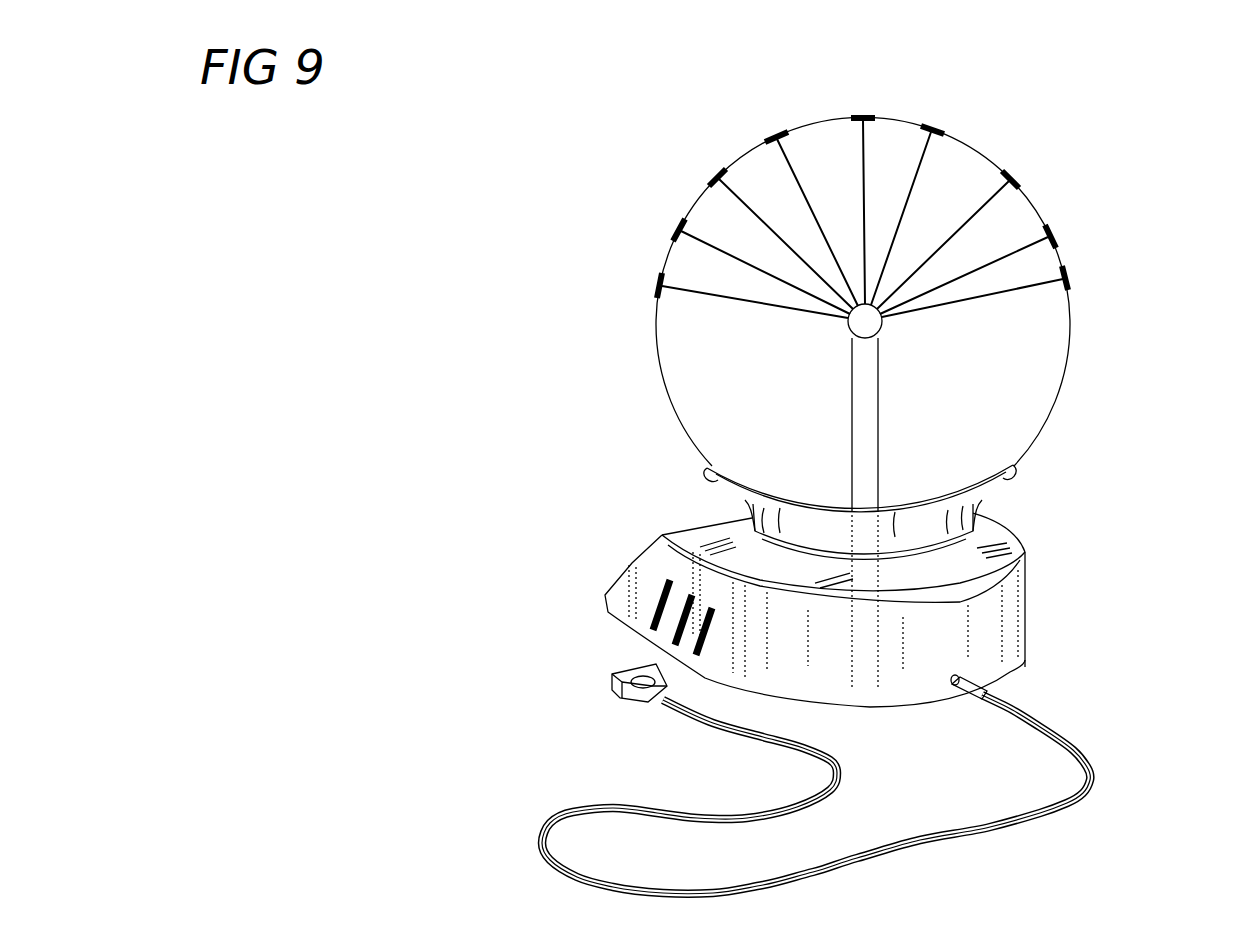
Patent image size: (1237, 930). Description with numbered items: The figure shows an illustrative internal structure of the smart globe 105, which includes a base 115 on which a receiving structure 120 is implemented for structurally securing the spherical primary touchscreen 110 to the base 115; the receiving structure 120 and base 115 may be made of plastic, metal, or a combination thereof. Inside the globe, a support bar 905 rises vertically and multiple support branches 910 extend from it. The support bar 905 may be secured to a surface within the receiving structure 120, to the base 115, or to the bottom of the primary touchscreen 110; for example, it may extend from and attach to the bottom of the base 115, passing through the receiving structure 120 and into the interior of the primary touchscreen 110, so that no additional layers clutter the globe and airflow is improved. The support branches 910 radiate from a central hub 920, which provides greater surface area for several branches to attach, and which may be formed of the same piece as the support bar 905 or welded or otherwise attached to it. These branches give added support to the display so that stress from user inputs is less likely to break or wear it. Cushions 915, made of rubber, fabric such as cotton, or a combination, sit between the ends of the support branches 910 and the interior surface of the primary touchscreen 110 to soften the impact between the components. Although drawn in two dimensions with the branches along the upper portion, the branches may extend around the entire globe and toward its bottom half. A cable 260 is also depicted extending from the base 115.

The smart globe 105 is at (1092, 152).
The primary touchscreen 110 is at (1069, 366).
The base 115 is at (660, 537).
The receiving structure 120 is at (726, 496).
The cable 260 is at (1082, 755).
The support bar 905 is at (880, 403).
The support branches 910 is at (752, 305).
The cushions 915 is at (776, 139).
The central hub 920 is at (876, 337).